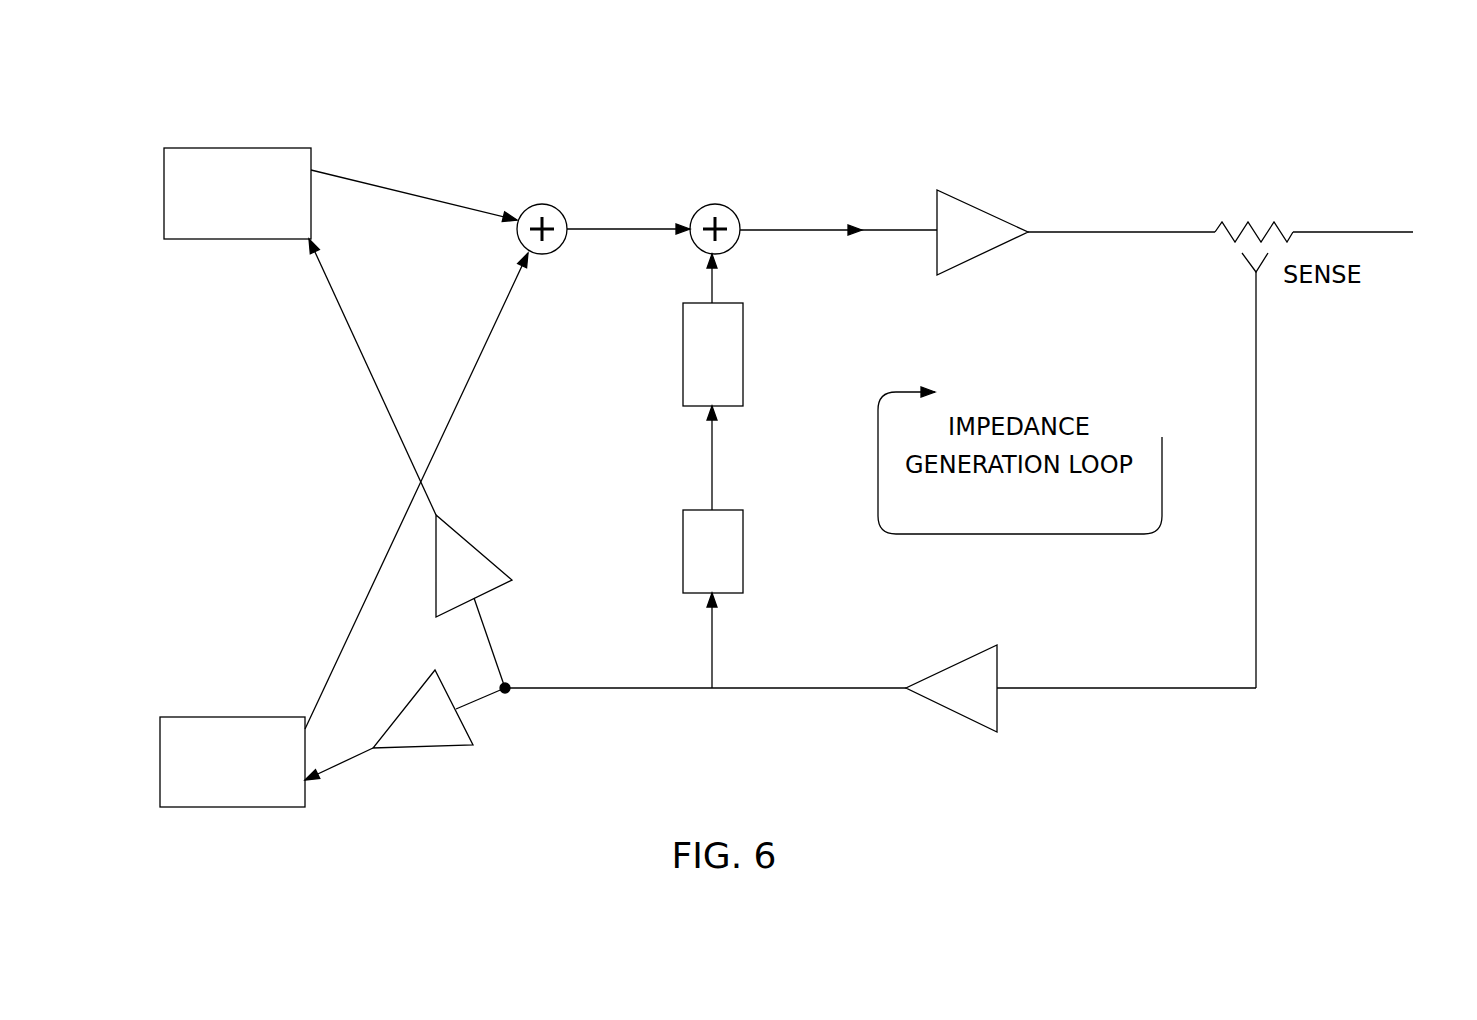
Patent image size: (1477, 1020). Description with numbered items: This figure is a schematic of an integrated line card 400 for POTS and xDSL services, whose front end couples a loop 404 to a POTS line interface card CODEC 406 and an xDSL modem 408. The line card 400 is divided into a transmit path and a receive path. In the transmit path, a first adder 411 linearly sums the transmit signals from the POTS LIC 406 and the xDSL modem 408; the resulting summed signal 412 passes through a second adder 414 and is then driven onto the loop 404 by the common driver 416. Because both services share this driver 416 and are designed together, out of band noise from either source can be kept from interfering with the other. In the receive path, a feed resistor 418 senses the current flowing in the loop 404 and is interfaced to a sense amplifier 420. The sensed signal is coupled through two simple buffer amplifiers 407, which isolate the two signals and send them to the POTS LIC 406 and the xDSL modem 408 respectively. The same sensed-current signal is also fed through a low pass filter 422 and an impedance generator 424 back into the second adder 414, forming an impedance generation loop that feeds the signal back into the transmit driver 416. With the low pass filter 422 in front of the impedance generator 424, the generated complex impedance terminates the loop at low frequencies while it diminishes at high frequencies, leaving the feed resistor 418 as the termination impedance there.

The integrated line card 400 is at (1080, 816).
The loop 404 is at (1375, 233).
The POTS line interface card CODEC 406 is at (298, 162).
The buffer amplifier 407 is at (472, 560).
The xDSL modem 408 is at (237, 730).
The first adder 411 is at (556, 208).
The summed signal 412 is at (630, 226).
The second adder 414 is at (728, 208).
The driver 416 is at (985, 220).
The feed resistor 418 is at (1288, 225).
The sense amplifier 420 is at (947, 688).
The low pass filter 422 is at (740, 560).
The impedance generator 424 is at (692, 347).